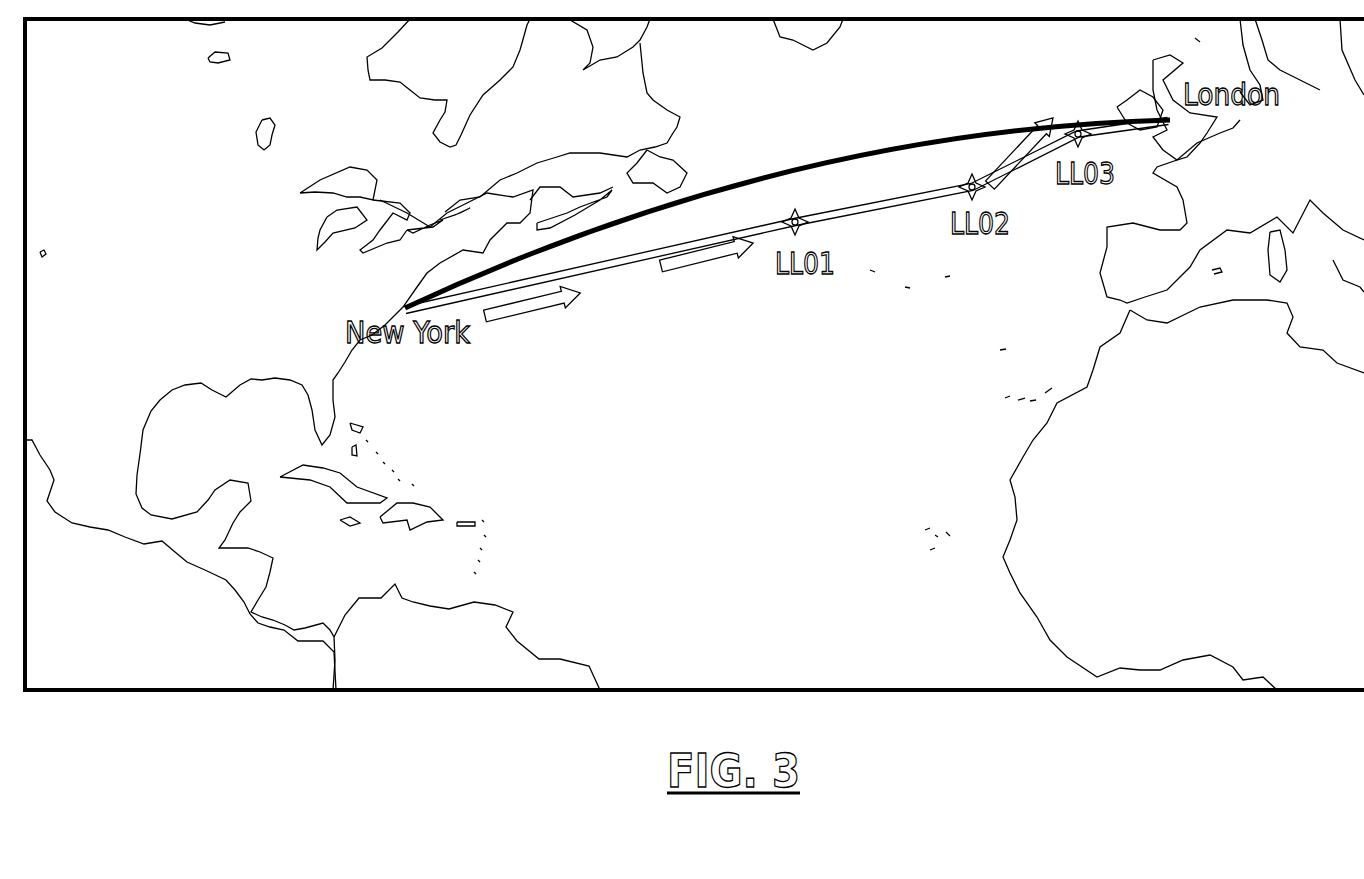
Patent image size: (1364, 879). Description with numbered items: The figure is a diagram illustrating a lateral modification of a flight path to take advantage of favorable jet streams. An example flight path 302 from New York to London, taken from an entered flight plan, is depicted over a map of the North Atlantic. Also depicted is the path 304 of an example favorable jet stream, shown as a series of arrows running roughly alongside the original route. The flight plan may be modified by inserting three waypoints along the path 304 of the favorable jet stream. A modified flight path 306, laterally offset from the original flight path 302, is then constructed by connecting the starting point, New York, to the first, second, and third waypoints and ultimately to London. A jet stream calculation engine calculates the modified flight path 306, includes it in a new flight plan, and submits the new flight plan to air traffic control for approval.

The flight path 302 is at (890, 148).
The path of favorable jet stream 304 is at (523, 320).
The modified flight path 306 is at (617, 273).